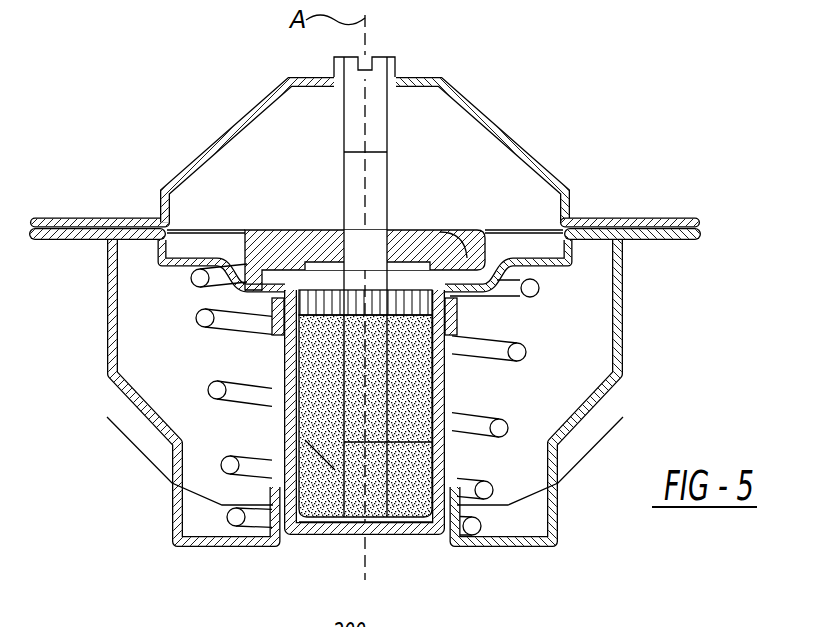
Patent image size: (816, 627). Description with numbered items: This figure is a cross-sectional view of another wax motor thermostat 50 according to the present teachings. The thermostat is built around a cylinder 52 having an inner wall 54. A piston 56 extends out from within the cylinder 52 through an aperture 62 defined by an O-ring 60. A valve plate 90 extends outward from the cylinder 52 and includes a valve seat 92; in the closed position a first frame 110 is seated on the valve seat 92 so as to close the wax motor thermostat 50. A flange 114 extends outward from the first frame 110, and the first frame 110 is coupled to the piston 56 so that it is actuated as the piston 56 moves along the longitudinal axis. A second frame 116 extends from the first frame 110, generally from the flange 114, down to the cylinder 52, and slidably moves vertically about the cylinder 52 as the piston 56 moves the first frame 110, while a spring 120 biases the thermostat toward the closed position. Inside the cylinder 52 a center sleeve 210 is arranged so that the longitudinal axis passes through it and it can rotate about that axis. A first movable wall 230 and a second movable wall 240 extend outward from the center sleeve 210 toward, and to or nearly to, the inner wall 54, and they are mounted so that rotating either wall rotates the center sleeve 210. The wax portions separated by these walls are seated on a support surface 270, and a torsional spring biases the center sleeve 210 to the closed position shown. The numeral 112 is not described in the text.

The wax motor thermostat 50 is at (103, 164).
The cylinder 52 is at (372, 530).
The inner wall 54 is at (420, 382).
The piston 56 is at (377, 165).
The O-ring 60 is at (428, 231).
The aperture 62 is at (418, 247).
The valve plate 90 is at (180, 263).
The valve seat 92 is at (165, 232).
The first frame 110 is at (228, 122).
The frame leg 112 is at (190, 212).
The flange 114 is at (700, 224).
The second frame 116 is at (107, 337).
The spring 120 is at (208, 390).
The center sleeve 210 is at (323, 520).
The first movable wall 230 is at (558, 483).
The second movable wall 240 is at (300, 437).
The support surface 270 is at (440, 413).